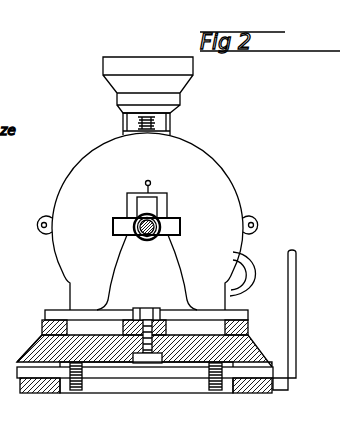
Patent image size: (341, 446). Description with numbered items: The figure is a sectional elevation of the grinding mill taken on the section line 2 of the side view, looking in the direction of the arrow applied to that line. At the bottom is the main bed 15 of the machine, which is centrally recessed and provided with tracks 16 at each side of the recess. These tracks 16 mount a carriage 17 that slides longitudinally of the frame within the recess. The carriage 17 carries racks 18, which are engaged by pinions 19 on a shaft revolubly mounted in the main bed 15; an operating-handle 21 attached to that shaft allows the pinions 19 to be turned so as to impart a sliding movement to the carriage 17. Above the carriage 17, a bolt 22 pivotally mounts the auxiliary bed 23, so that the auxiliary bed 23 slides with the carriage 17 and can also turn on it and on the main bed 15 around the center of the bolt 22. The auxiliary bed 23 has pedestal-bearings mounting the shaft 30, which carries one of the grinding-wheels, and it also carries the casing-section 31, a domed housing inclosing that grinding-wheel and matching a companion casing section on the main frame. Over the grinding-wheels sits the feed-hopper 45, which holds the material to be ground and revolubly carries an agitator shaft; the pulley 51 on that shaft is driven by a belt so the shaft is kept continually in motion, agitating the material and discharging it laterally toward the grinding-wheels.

The section line 2 is at (120, 0).
The feed-hopper 45 is at (175, 65).
The pulley 51 is at (170, 118).
The casing-section 31 is at (147, 221).
The shaft 30 is at (143, 239).
The auxiliary bed 23 is at (248, 327).
The tracks 16 is at (253, 347).
The carriage 17 is at (182, 347).
The main bed 15 is at (23, 363).
The bolt 22 is at (147, 308).
The pinions 19 is at (207, 388).
The racks 18 is at (290, 372).
The operating-handle 21 is at (296, 310).